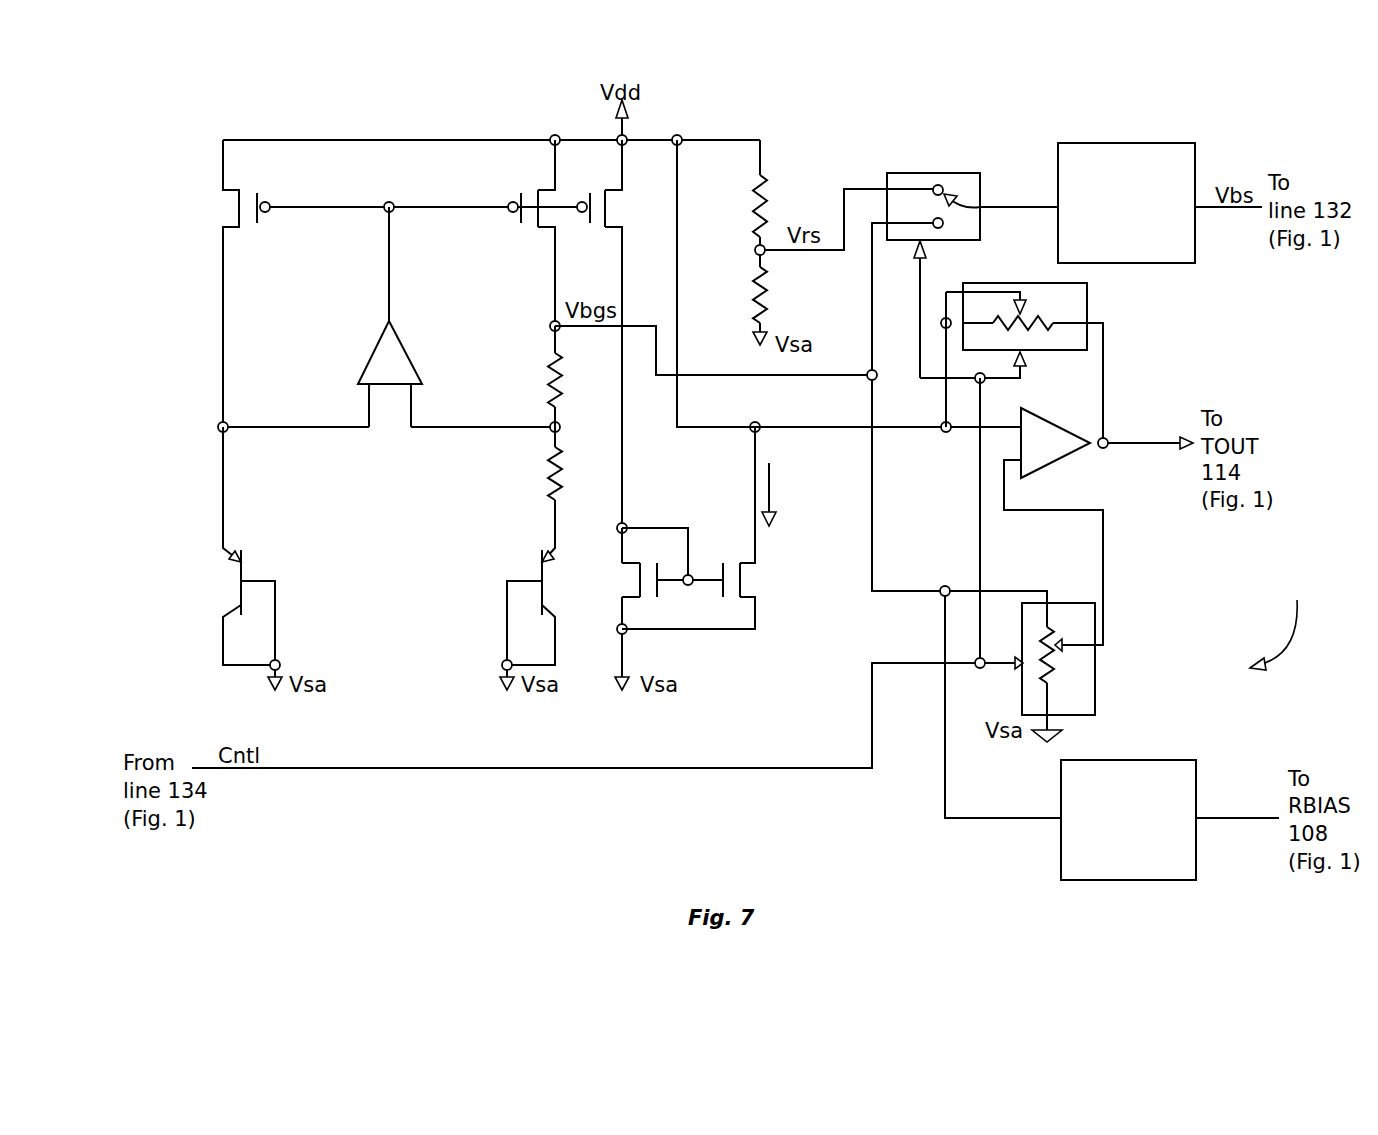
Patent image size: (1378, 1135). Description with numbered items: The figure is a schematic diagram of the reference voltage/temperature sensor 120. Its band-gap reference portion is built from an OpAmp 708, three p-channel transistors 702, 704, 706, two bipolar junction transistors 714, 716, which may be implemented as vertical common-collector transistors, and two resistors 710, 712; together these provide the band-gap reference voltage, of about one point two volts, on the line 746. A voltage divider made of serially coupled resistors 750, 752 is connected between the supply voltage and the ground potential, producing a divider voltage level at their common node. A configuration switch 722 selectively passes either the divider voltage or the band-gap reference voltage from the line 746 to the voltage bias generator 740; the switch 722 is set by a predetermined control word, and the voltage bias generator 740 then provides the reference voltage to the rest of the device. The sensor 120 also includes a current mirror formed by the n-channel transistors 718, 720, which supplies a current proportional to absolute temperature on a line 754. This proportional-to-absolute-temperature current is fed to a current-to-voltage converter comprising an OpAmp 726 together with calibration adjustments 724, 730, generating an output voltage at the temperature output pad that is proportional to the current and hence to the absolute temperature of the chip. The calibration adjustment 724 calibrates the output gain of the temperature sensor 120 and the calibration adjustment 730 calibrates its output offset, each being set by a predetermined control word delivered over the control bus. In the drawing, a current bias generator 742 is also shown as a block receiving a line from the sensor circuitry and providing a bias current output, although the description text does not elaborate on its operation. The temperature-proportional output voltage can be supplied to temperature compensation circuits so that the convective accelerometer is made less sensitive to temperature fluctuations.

The reference voltage/temperature sensor 120 is at (1286, 620).
The p-channel transistor 702 is at (227, 283).
The p-channel transistor 704 is at (531, 233).
The p-channel transistor 706 is at (620, 334).
The OpAmp 708 is at (373, 355).
The resistor 710 is at (532, 376).
The resistor 712 is at (532, 487).
The bipolar junction transistor 714 is at (235, 558).
The bipolar junction transistor 716 is at (543, 595).
The n-channel transistor 718 is at (641, 606).
The n-channel transistor 720 is at (707, 528).
The configuration switch 722 is at (932, 173).
The calibration adjustment 724 is at (1011, 363).
The OpAmp 726 is at (1098, 526).
The calibration adjustment 730 is at (1059, 672).
The voltage bias generator 740 is at (1126, 203).
The current bias generator 742 is at (1128, 820).
The line 746 is at (723, 378).
The resistor 750 is at (736, 195).
The resistor 752 is at (736, 300).
The line 754 is at (755, 500).